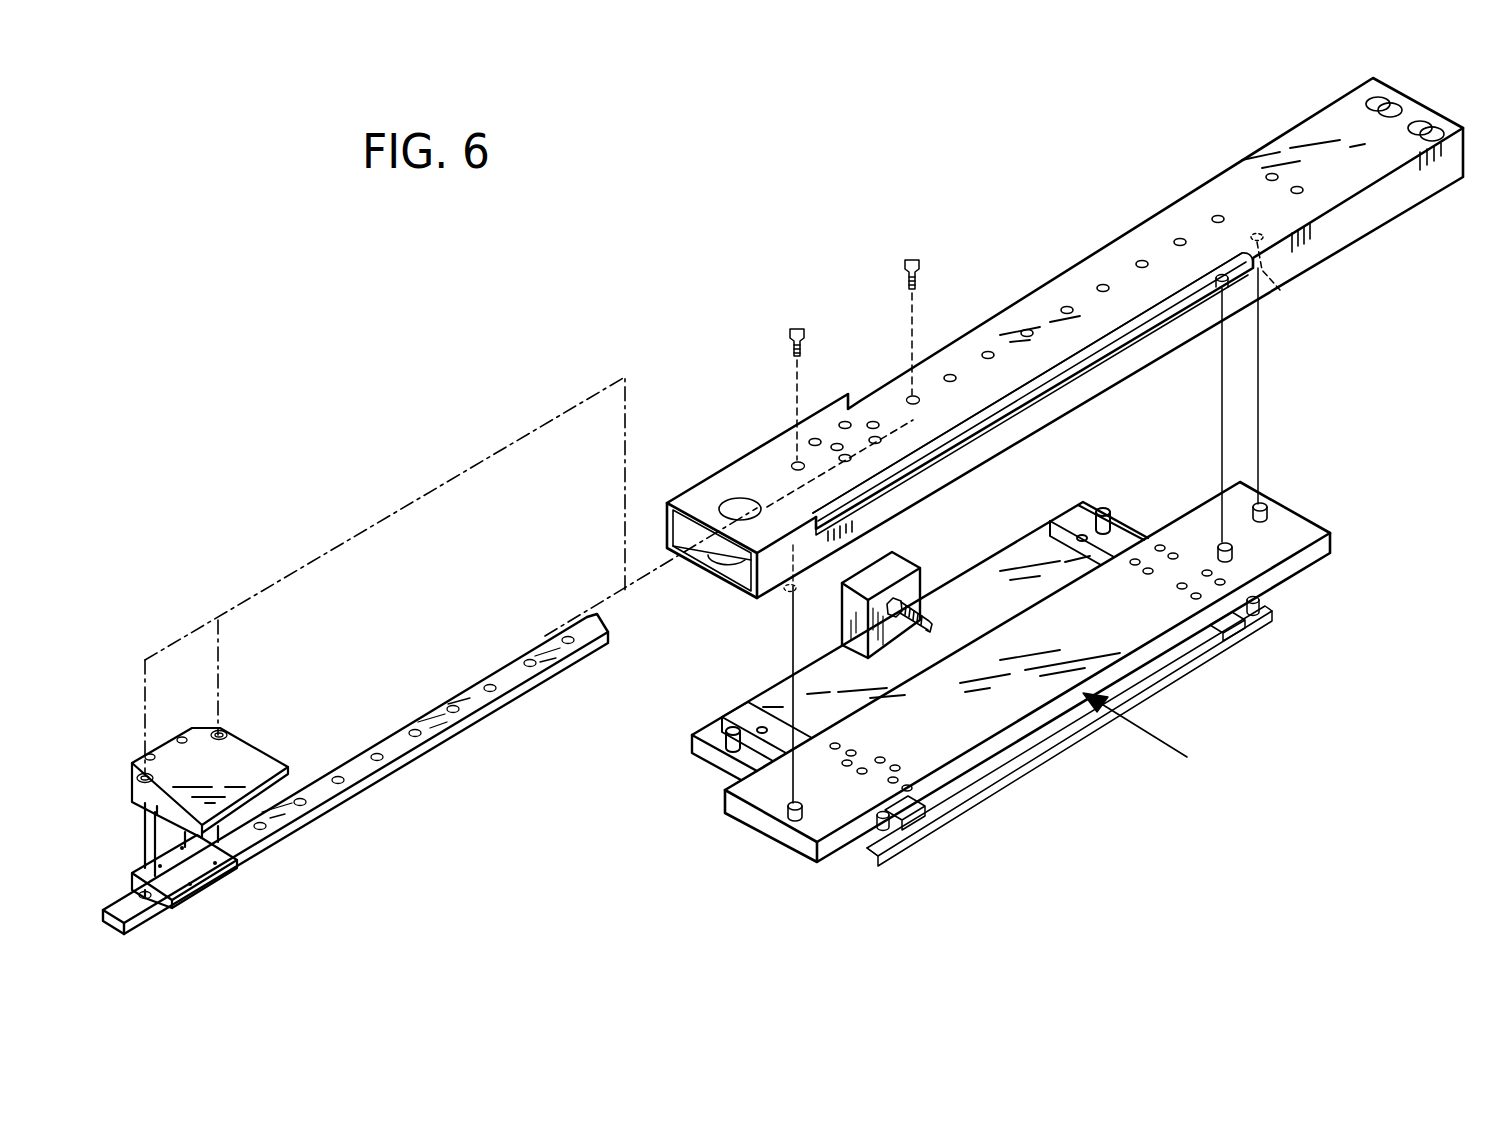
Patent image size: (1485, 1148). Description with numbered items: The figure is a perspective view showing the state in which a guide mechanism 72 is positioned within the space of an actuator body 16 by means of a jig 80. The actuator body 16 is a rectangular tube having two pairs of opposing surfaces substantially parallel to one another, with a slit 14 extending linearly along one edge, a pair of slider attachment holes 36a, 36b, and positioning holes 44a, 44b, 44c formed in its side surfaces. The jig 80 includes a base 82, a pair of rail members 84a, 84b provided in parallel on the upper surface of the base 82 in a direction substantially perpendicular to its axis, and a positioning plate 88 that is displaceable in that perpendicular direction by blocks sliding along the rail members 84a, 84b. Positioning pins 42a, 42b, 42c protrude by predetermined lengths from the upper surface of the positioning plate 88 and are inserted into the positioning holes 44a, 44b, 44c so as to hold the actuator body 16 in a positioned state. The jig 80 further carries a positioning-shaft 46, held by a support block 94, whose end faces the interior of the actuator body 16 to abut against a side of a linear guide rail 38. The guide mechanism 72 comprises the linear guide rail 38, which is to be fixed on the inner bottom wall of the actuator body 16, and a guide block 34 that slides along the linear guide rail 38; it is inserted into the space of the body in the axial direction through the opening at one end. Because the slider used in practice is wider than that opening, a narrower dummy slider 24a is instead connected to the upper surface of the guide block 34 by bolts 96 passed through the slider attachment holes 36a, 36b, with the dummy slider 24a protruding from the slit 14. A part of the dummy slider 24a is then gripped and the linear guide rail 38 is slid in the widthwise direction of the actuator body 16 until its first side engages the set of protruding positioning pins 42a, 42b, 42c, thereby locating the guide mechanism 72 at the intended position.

The slit 14 is at (987, 423).
The actuator body 16 is at (1112, 234).
The dummy slider 24a is at (240, 757).
The guide block 34 is at (183, 863).
The slider attachment hole 36a is at (797, 465).
The slider attachment hole 36b is at (913, 398).
The linear guide rail 38 is at (477, 698).
The positioning pin 42a is at (796, 822).
The positioning pin 42b is at (1234, 555).
The positioning pin 42c is at (1270, 506).
The positioning hole 44a is at (790, 560).
The positioning hole 44b is at (1220, 285).
The positioning hole 44c is at (1280, 290).
The positioning-shaft 46 is at (928, 618).
The guide mechanism 72 is at (355, 774).
The jig 80 is at (984, 657).
The base 82 is at (1012, 563).
The rail member 84a is at (740, 753).
The rail member 84b is at (1072, 527).
The positioning plate 88 is at (968, 712).
The support block 94 is at (883, 571).
The bolt 96 is at (797, 327).